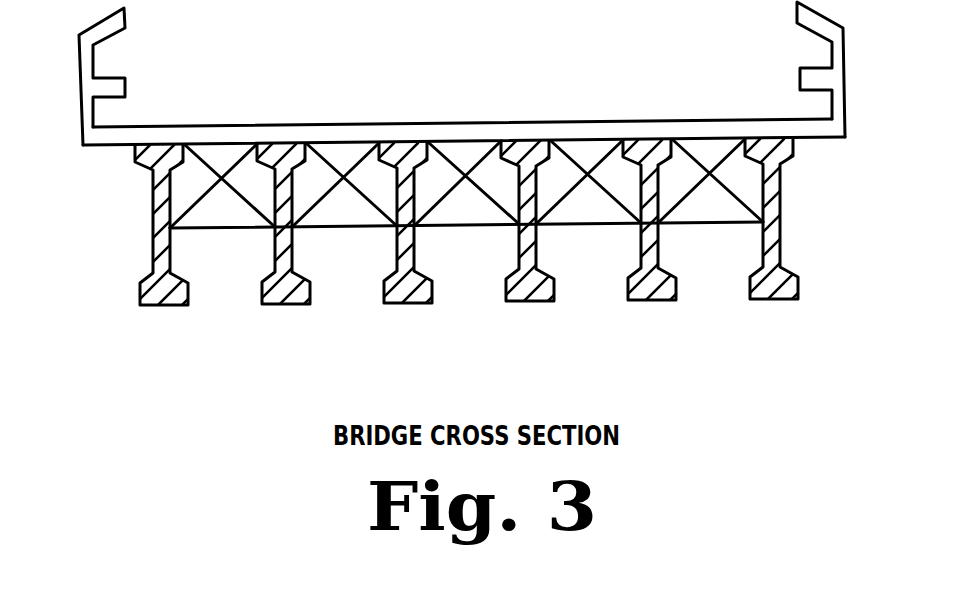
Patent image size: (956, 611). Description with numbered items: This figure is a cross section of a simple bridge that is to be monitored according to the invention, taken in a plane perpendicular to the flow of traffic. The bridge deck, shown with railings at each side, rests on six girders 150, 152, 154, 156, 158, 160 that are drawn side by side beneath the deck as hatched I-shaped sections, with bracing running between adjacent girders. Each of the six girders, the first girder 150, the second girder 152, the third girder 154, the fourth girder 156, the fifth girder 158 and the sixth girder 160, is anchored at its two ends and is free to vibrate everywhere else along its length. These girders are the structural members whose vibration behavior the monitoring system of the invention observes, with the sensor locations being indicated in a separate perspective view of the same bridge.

The girder 150 is at (140, 303).
The girder 152 is at (263, 305).
The girder 154 is at (383, 302).
The girder 156 is at (505, 302).
The girder 158 is at (645, 301).
The girder 160 is at (772, 300).